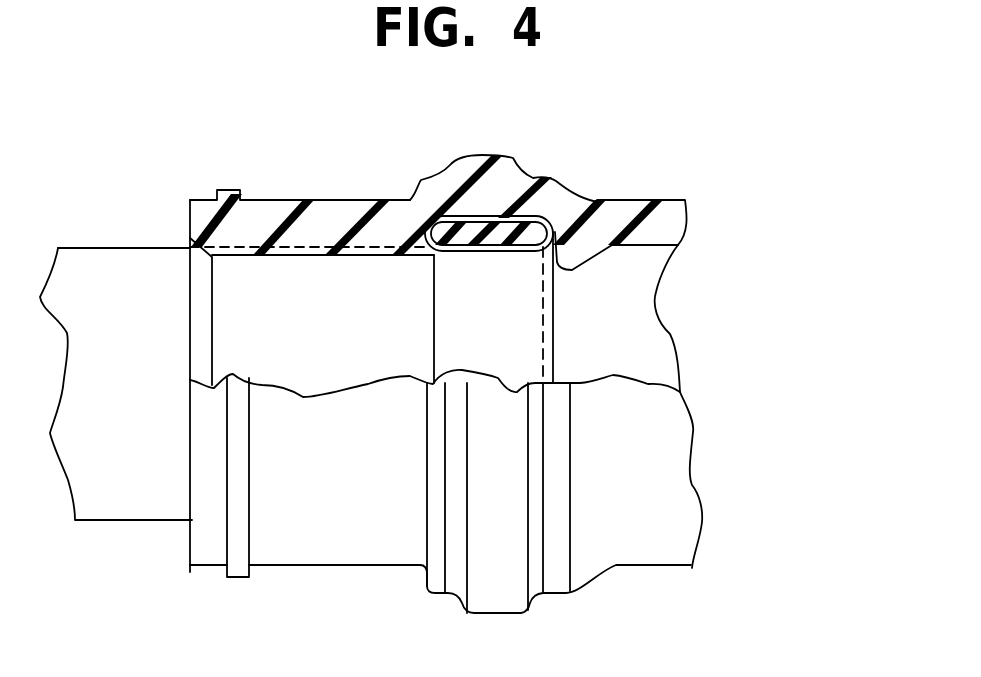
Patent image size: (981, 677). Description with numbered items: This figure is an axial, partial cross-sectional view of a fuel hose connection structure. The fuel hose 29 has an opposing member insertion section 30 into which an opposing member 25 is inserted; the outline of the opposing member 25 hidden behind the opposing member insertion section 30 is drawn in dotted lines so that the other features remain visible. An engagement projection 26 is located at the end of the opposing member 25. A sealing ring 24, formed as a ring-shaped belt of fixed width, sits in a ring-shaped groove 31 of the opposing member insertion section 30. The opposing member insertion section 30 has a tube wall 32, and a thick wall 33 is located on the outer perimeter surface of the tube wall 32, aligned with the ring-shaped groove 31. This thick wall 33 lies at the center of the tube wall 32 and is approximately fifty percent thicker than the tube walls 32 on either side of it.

The sealing ring 24 is at (457, 240).
The opposing member 25 is at (547, 334).
The engagement projection 26 is at (525, 240).
The fuel hose 29 is at (648, 186).
The opposing member insertion section 30 is at (277, 218).
The ring-shaped groove 31 is at (500, 218).
The tube wall 32 is at (567, 197).
The thick wall 33 is at (472, 166).